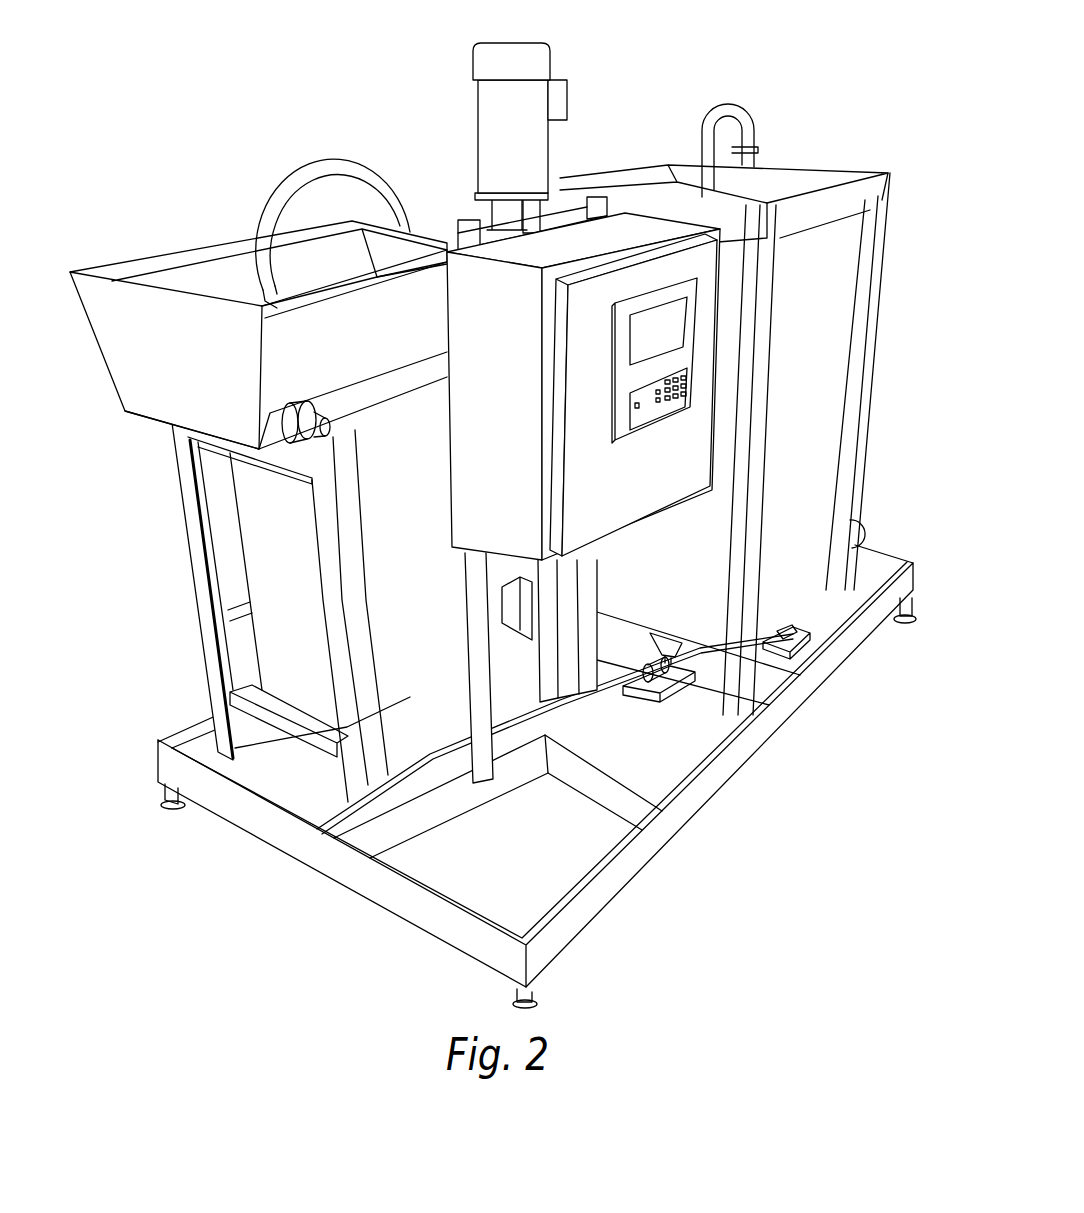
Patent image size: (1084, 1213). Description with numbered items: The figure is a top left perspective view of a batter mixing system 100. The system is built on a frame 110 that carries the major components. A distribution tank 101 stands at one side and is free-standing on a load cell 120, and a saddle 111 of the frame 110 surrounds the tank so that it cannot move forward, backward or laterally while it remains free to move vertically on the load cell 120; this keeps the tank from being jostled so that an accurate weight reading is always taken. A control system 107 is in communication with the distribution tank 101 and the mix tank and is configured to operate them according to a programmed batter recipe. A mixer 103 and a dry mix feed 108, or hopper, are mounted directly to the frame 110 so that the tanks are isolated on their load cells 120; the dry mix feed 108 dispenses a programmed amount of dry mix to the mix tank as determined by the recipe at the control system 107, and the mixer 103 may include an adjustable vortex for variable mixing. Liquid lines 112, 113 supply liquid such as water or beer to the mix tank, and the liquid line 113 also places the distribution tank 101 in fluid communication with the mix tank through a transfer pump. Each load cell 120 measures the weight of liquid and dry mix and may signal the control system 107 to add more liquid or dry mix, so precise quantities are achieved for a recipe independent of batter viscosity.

The batter mixing system 100 is at (291, 86).
The distribution tank 101 is at (820, 420).
The mixer 103 is at (550, 58).
The control system 107 is at (650, 493).
The dry mix feed 108 is at (203, 247).
The frame 110 is at (202, 823).
The saddle 111 is at (193, 607).
The liquid line 112 is at (363, 180).
The liquid line 113 is at (741, 110).
The load cell 120 is at (800, 650).